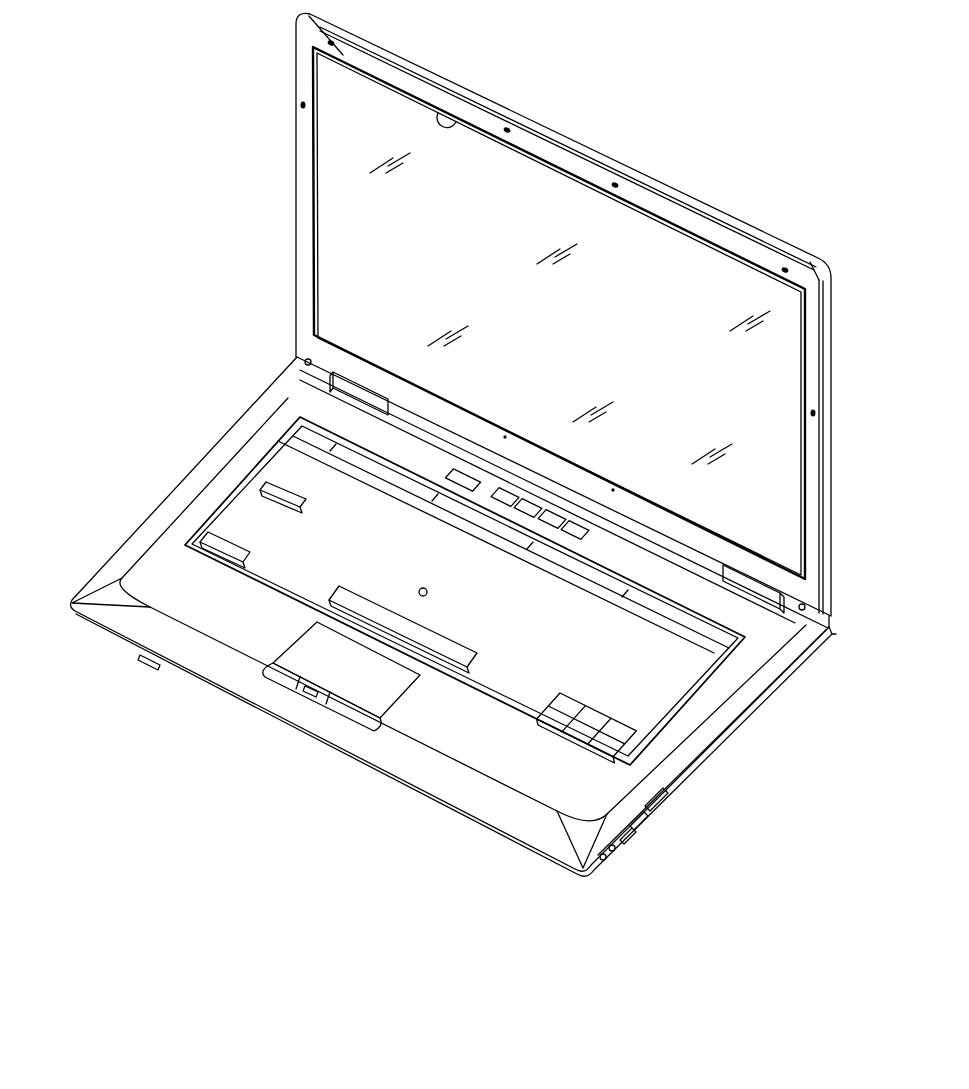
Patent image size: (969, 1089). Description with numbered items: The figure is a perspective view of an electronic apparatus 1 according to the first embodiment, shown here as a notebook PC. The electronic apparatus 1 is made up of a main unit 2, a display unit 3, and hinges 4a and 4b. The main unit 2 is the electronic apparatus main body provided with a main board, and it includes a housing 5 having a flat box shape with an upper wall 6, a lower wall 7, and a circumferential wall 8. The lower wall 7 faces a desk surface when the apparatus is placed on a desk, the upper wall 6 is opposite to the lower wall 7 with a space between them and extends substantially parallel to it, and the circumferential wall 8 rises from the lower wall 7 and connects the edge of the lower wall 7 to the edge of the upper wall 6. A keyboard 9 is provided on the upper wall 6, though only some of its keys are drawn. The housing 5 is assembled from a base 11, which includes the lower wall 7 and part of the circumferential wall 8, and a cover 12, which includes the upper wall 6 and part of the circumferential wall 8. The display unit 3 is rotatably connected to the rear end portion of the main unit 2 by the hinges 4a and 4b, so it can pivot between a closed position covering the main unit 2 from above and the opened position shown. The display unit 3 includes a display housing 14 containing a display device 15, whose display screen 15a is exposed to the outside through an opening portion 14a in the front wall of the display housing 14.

The electronic apparatus 1 is at (174, 203).
The main unit 2 is at (205, 450).
The display unit 3 is at (290, 200).
The hinge 4a is at (360, 383).
The hinge 4b is at (745, 578).
The housing 5 is at (148, 575).
The upper wall 6 is at (447, 729).
The lower wall 7 is at (667, 806).
The circumferential wall 8 is at (805, 658).
The keyboard 9 is at (288, 487).
The base 11 is at (600, 866).
The cover 12 is at (527, 767).
The display housing 14 is at (685, 194).
The opening portion 14a is at (459, 117).
The display device 15 is at (567, 219).
The display screen 15a is at (589, 317).